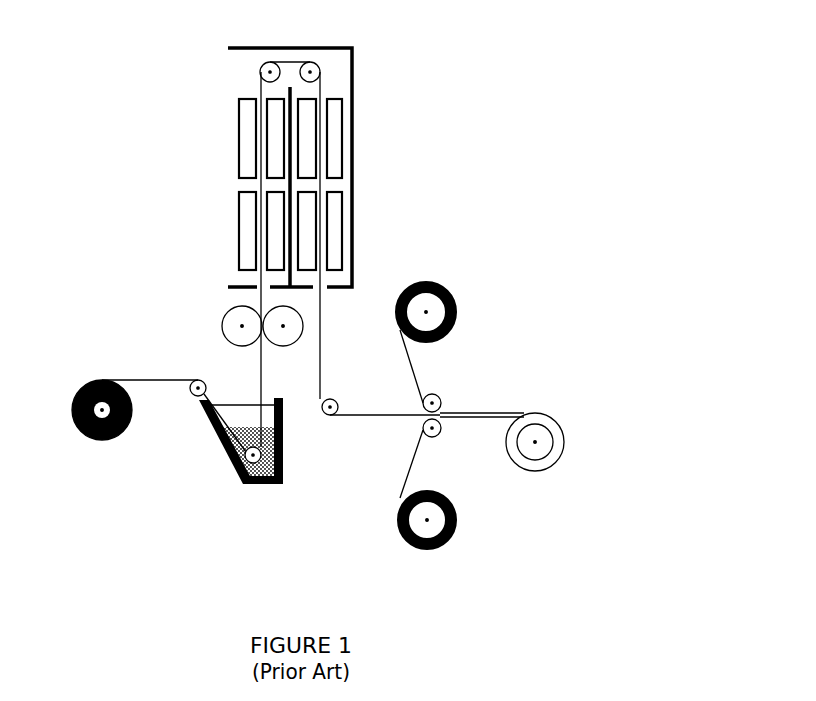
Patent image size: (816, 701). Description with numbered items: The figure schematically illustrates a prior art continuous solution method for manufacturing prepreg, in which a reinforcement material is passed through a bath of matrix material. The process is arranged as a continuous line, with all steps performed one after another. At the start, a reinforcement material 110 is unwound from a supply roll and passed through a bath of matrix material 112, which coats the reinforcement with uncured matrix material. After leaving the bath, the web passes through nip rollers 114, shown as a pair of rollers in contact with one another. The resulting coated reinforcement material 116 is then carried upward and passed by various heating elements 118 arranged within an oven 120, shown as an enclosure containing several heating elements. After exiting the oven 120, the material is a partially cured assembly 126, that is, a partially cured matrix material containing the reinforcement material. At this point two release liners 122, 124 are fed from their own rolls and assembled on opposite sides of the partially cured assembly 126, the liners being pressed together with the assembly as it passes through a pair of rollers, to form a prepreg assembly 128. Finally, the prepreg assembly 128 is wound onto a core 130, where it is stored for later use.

The reinforcement material 110 is at (132, 380).
The bath of matrix material 112 is at (243, 425).
The nip rollers 114 is at (242, 326).
The coated reinforcement material 116 is at (264, 365).
The heating elements 118 is at (245, 128).
The oven 120 is at (353, 188).
The release liner 122 is at (402, 487).
The release liner 124 is at (412, 362).
The partially cured assembly 126 is at (357, 415).
The prepreg assembly 128 is at (497, 412).
The core 130 is at (540, 432).